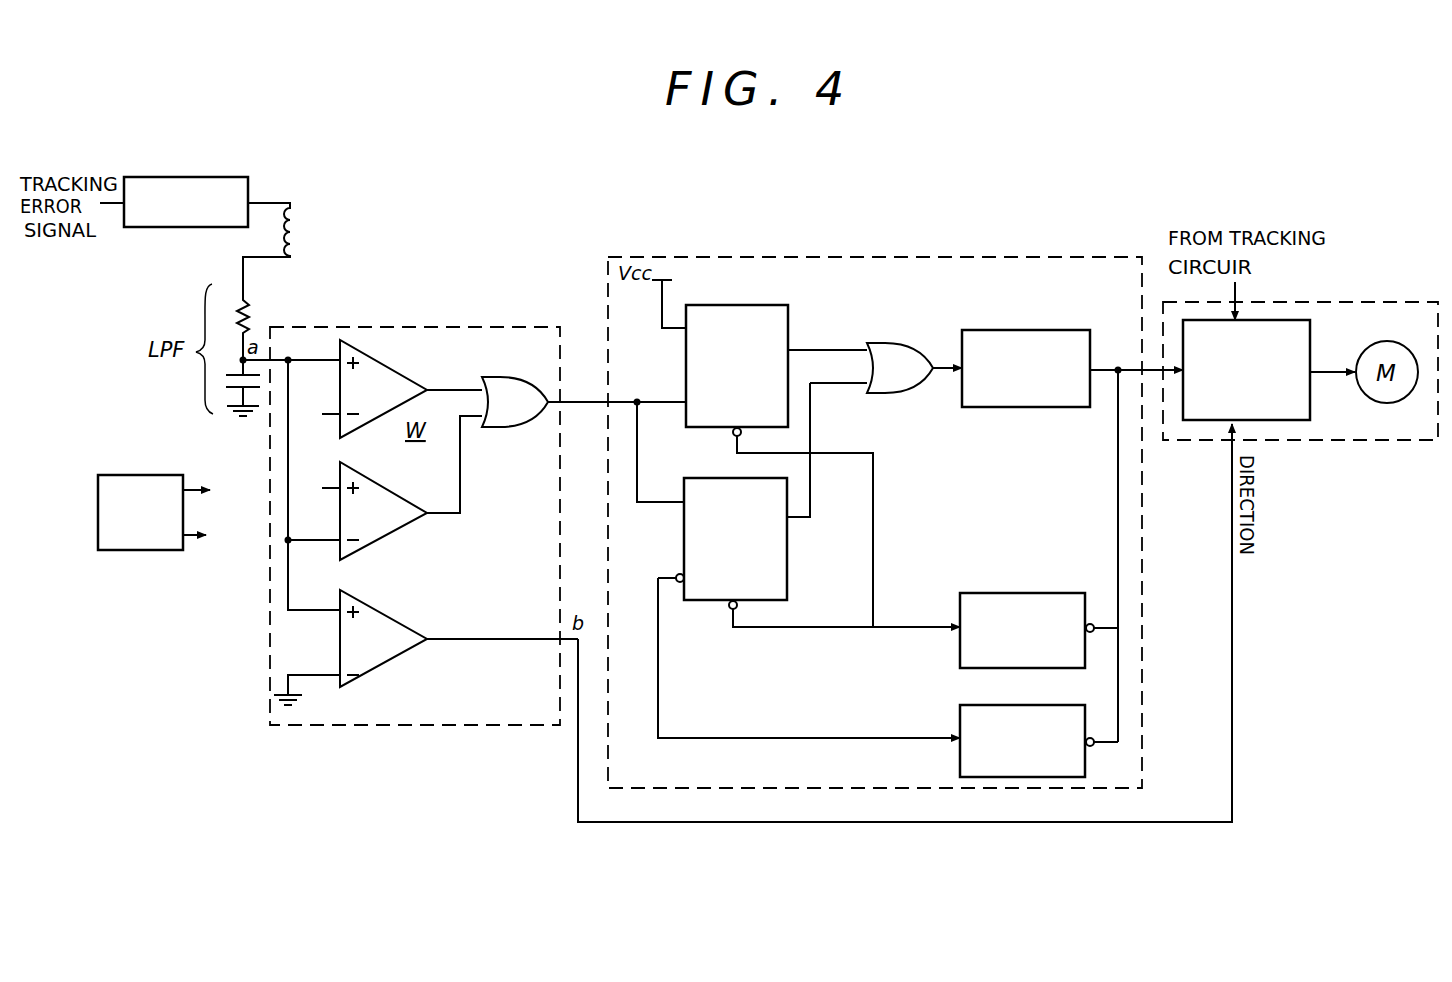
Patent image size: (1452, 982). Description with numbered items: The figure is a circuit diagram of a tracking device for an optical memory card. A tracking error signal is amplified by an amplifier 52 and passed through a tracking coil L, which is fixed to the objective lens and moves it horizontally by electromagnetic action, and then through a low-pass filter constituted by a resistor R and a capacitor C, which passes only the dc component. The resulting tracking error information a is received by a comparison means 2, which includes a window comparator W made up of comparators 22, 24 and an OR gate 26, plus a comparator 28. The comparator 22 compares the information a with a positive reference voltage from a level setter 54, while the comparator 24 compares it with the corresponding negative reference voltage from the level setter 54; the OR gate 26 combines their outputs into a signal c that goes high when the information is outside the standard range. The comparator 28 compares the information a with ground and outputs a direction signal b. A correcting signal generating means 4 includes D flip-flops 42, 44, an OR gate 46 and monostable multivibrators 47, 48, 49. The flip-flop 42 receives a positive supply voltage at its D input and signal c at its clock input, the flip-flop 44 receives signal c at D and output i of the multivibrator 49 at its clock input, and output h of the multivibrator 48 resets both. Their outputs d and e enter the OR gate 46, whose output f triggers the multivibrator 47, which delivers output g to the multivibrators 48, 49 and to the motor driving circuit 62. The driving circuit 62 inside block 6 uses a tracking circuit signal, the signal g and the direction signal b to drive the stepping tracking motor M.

The amplifier 52 is at (199, 177).
The tracking coil L is at (296, 215).
The resistor R is at (264, 319).
The capacitor C is at (214, 404).
The level setter 54 is at (140, 475).
The comparison means 2 is at (476, 327).
The comparator 22 is at (388, 363).
The comparator 24 is at (386, 486).
The OR gate 26 is at (510, 377).
The comparator 28 is at (390, 606).
The correcting signal generating means 4 is at (992, 257).
The D flip-flop 42 is at (752, 305).
The D flip-flop 44 is at (787, 570).
The OR gate 46 is at (890, 343).
The monostable multivibrator 47 is at (1028, 330).
The monostable multivibrator 48 is at (1014, 593).
The monostable multivibrator 49 is at (1008, 705).
The tracking motor block 6 is at (1388, 302).
The motor driving circuit 62 is at (1312, 340).